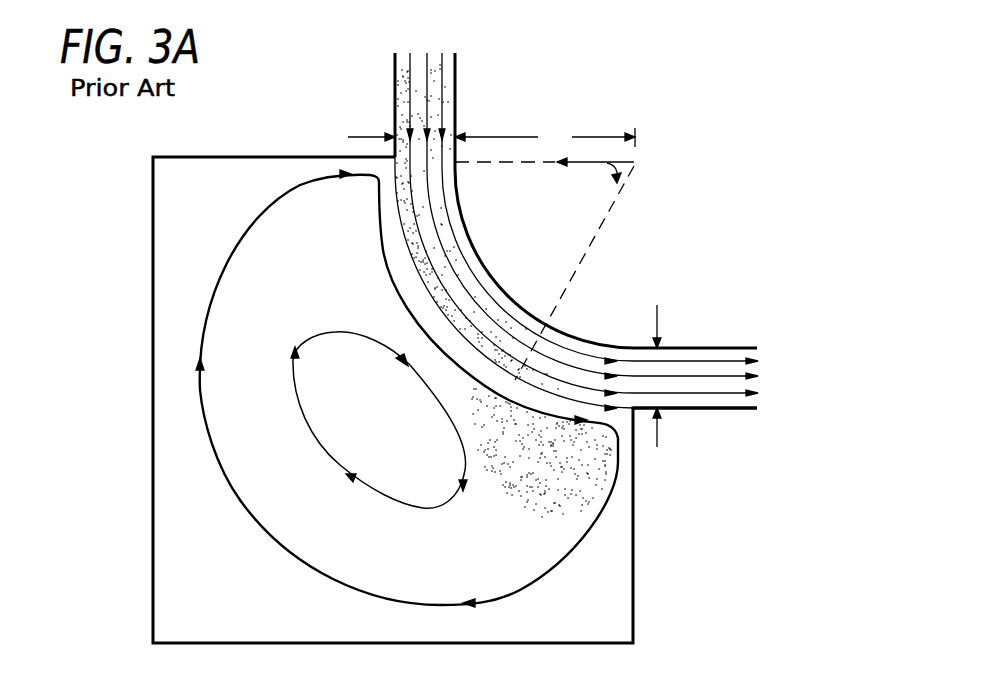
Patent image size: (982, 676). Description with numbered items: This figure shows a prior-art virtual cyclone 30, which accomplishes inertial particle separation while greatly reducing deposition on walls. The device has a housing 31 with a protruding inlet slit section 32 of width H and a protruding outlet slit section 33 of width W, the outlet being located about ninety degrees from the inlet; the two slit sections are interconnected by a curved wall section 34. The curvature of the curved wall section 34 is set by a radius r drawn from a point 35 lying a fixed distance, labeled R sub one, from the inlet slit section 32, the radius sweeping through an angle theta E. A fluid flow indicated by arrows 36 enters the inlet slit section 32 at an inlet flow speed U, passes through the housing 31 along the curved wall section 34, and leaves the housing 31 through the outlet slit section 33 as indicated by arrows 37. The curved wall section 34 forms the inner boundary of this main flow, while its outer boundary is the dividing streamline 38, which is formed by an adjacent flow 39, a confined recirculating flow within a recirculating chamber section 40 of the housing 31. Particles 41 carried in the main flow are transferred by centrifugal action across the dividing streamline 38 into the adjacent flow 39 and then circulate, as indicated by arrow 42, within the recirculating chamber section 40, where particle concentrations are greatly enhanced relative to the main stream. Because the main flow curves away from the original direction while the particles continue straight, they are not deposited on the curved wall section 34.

The virtual cyclone 30 is at (380, 400).
The housing 31 is at (636, 547).
The inlet slit section 32 is at (395, 80).
The outlet slit section 33 is at (697, 347).
The curved wall section 34 is at (504, 278).
The point 35 is at (636, 159).
The arrows indicating fluid flow 36 is at (412, 53).
The arrows indicating outward flow 37 is at (757, 393).
The dividing streamline 38 is at (557, 384).
The adjacent flow 39 is at (381, 236).
The recirculating chamber section 40 is at (194, 579).
The particles 41 is at (512, 483).
The arrow indicating particle circulation 42 is at (325, 447).